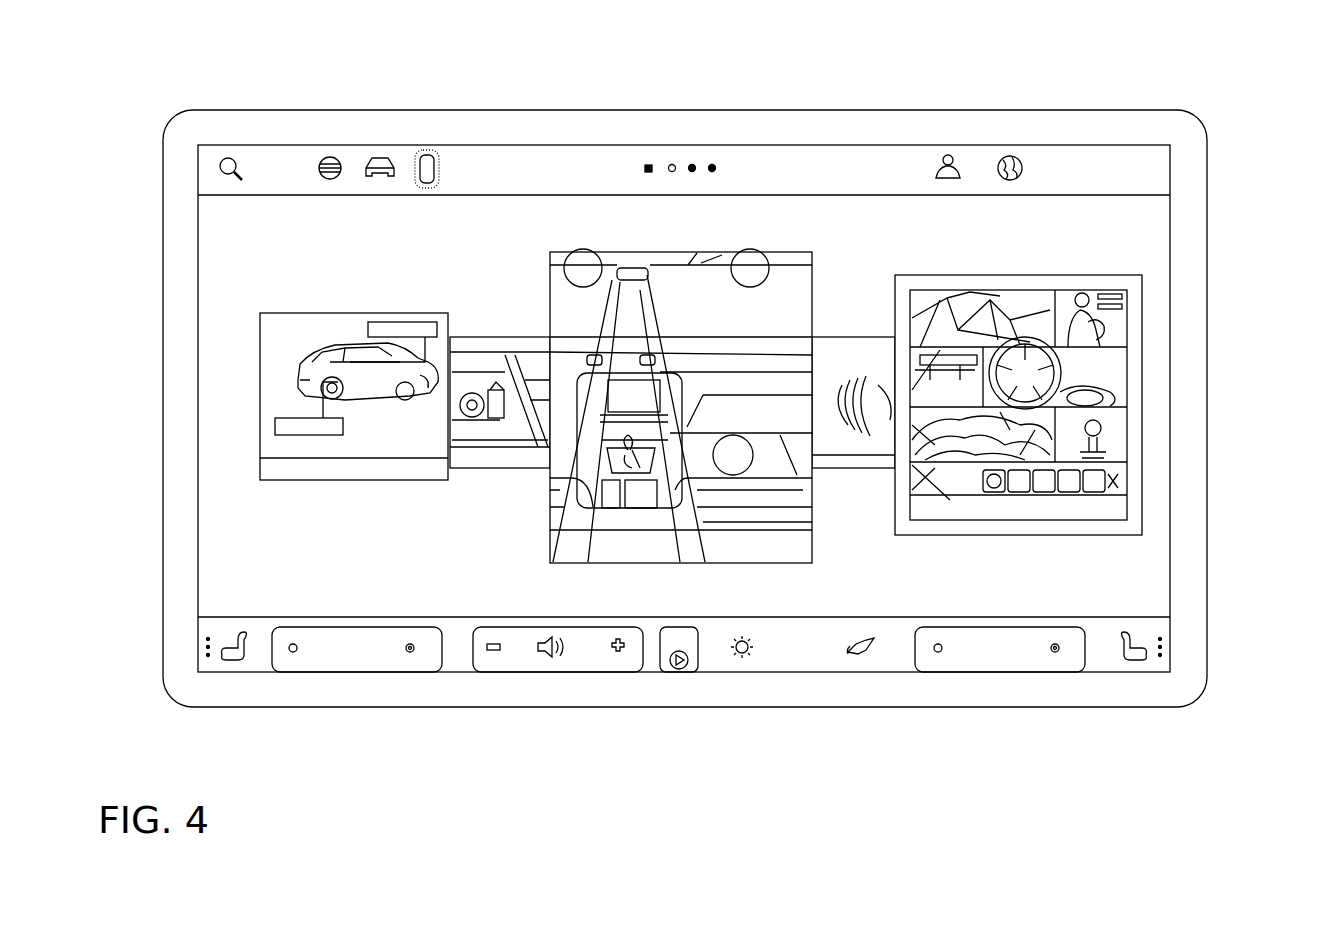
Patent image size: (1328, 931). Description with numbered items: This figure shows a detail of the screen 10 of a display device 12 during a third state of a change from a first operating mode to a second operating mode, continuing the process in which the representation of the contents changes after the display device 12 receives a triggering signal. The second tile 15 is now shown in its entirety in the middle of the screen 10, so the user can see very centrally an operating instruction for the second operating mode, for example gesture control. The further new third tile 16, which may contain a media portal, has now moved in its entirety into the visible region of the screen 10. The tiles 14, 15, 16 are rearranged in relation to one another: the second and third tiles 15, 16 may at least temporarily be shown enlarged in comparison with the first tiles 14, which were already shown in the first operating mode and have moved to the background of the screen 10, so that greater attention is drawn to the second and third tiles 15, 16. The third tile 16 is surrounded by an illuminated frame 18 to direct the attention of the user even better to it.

The screen 10 is at (590, 202).
The display device 12 is at (1207, 112).
The first tiles 14 is at (488, 368).
The second tile 15 is at (566, 548).
The third tile 16 is at (1066, 415).
The illuminated frame 18 is at (1099, 455).